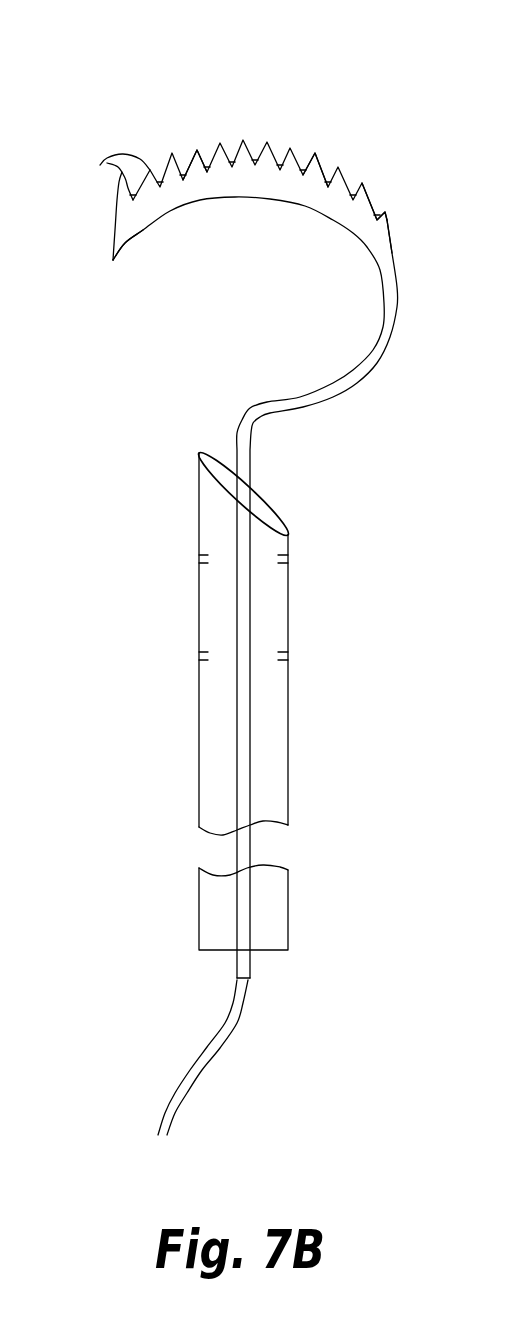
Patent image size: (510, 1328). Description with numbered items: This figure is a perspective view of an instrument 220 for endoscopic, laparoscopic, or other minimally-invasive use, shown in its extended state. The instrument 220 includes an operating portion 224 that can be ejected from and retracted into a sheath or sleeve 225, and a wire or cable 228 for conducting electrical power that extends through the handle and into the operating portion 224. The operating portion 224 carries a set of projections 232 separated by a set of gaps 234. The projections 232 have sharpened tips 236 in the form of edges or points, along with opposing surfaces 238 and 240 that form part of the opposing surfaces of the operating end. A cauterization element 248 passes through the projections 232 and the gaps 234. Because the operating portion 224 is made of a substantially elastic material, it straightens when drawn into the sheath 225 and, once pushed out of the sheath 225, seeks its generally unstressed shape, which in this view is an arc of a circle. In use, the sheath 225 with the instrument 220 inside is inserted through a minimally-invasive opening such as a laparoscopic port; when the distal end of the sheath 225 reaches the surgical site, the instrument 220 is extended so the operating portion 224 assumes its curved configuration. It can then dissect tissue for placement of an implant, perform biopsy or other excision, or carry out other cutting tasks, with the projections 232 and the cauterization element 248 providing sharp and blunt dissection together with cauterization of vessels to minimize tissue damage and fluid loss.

The instrument 220 is at (380, 425).
The operating portion 224 is at (150, 122).
The sheath 225 is at (270, 735).
The wire or cable 228 is at (203, 1062).
The projections 232 is at (100, 165).
The gaps 234 is at (279, 148).
The sharpened tips 236 is at (198, 142).
The opposing surface 238 is at (360, 228).
The opposing surface 240 is at (130, 242).
The cauterization element 248 is at (301, 150).